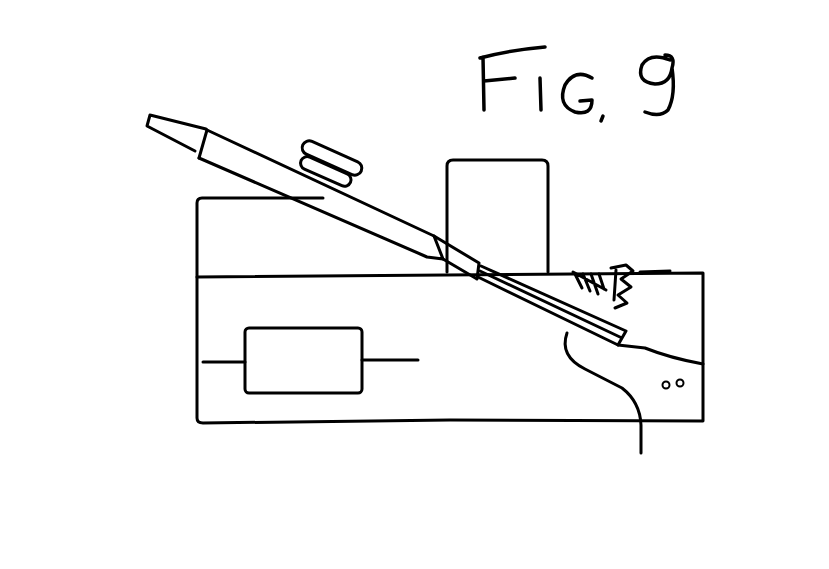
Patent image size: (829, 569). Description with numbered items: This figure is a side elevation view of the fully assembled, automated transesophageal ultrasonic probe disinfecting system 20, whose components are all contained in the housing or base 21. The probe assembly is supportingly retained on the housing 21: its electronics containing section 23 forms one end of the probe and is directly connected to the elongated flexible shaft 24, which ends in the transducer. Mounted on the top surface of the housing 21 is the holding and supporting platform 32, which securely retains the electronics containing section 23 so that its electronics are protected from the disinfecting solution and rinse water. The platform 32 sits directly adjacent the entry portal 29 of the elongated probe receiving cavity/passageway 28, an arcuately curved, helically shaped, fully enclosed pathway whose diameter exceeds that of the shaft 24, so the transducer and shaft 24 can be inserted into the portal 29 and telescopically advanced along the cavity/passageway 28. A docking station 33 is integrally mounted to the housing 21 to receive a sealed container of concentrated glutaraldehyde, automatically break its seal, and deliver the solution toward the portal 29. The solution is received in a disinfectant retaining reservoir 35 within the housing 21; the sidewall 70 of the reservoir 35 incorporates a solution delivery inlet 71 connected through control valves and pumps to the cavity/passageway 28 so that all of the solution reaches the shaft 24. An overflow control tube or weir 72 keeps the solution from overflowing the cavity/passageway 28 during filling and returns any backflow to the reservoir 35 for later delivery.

The transesophageal ultrasonic probe disinfecting system 20 is at (158, 217).
The housing 21 is at (216, 308).
The electronics containing section 23 is at (238, 158).
The elongated flexible shaft 24 is at (560, 300).
The elongated probe receiving cavity/passageway 28 is at (700, 364).
The entry portal 29 is at (638, 475).
The holding and supporting platform 32 is at (262, 237).
The docking station 33 is at (500, 176).
The disinfectant retaining reservoir 35 is at (680, 215).
The sidewall 70 is at (597, 300).
The solution delivery inlet 71 is at (665, 316).
The overflow control tube or weir 72 is at (650, 270).